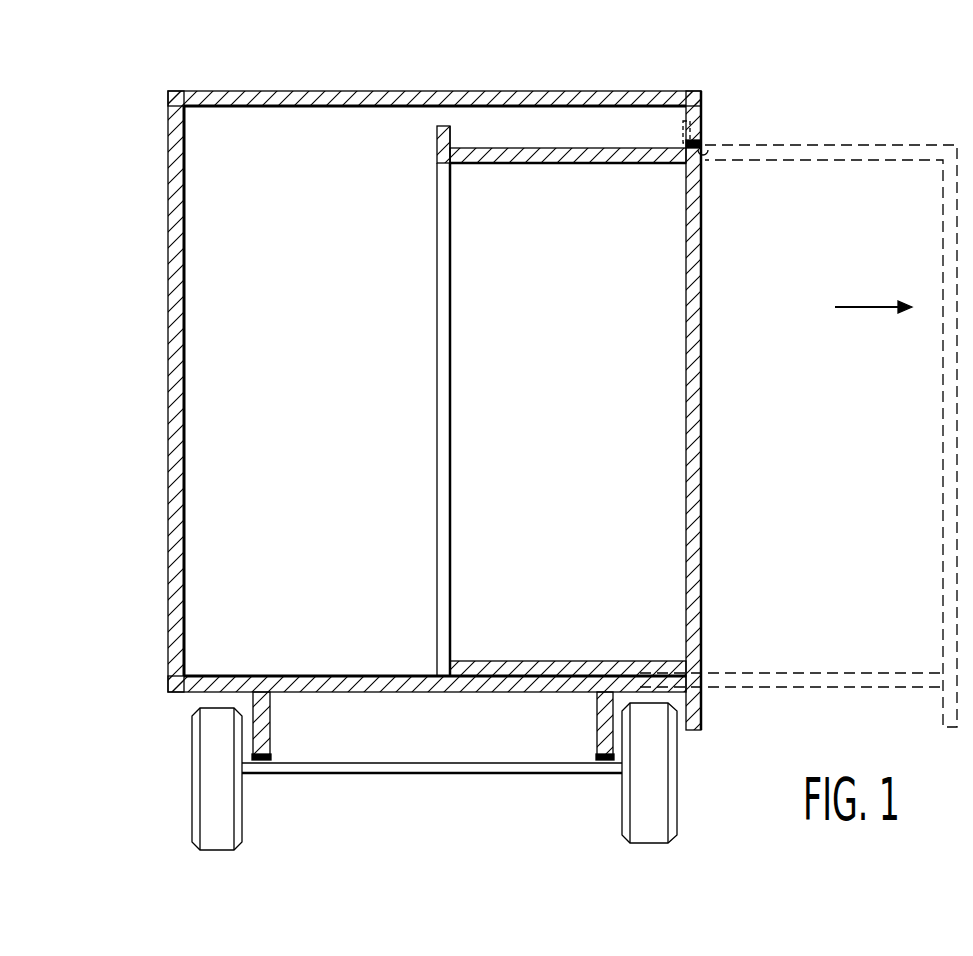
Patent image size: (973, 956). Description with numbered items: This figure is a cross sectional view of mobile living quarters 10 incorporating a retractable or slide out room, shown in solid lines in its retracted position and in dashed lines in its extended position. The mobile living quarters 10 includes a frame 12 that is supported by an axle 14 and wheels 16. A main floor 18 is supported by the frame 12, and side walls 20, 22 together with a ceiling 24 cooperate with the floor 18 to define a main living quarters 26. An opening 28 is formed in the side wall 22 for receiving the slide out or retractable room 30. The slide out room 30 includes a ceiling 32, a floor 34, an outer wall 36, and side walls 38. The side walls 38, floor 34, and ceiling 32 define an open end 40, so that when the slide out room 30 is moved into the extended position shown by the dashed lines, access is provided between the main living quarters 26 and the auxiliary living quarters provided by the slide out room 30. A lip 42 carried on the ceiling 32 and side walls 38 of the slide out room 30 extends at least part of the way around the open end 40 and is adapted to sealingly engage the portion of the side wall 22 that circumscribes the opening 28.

The mobile living quarters 10 is at (770, 84).
The frame 12 is at (272, 724).
The axle 14 is at (437, 766).
The wheels 16 is at (213, 832).
The main floor 18 is at (390, 680).
The side wall 20 is at (170, 422).
The side wall 22 is at (699, 117).
The ceiling 24 is at (453, 90).
The main living quarters 26 is at (435, 391).
The opening 28 is at (712, 150).
The slide out room 30 is at (798, 410).
The ceiling 32 is at (575, 165).
The floor 34 is at (551, 661).
The outer wall 36 is at (697, 450).
The side walls 38 is at (478, 498).
The open end 40 is at (438, 302).
The lip 42 is at (437, 131).